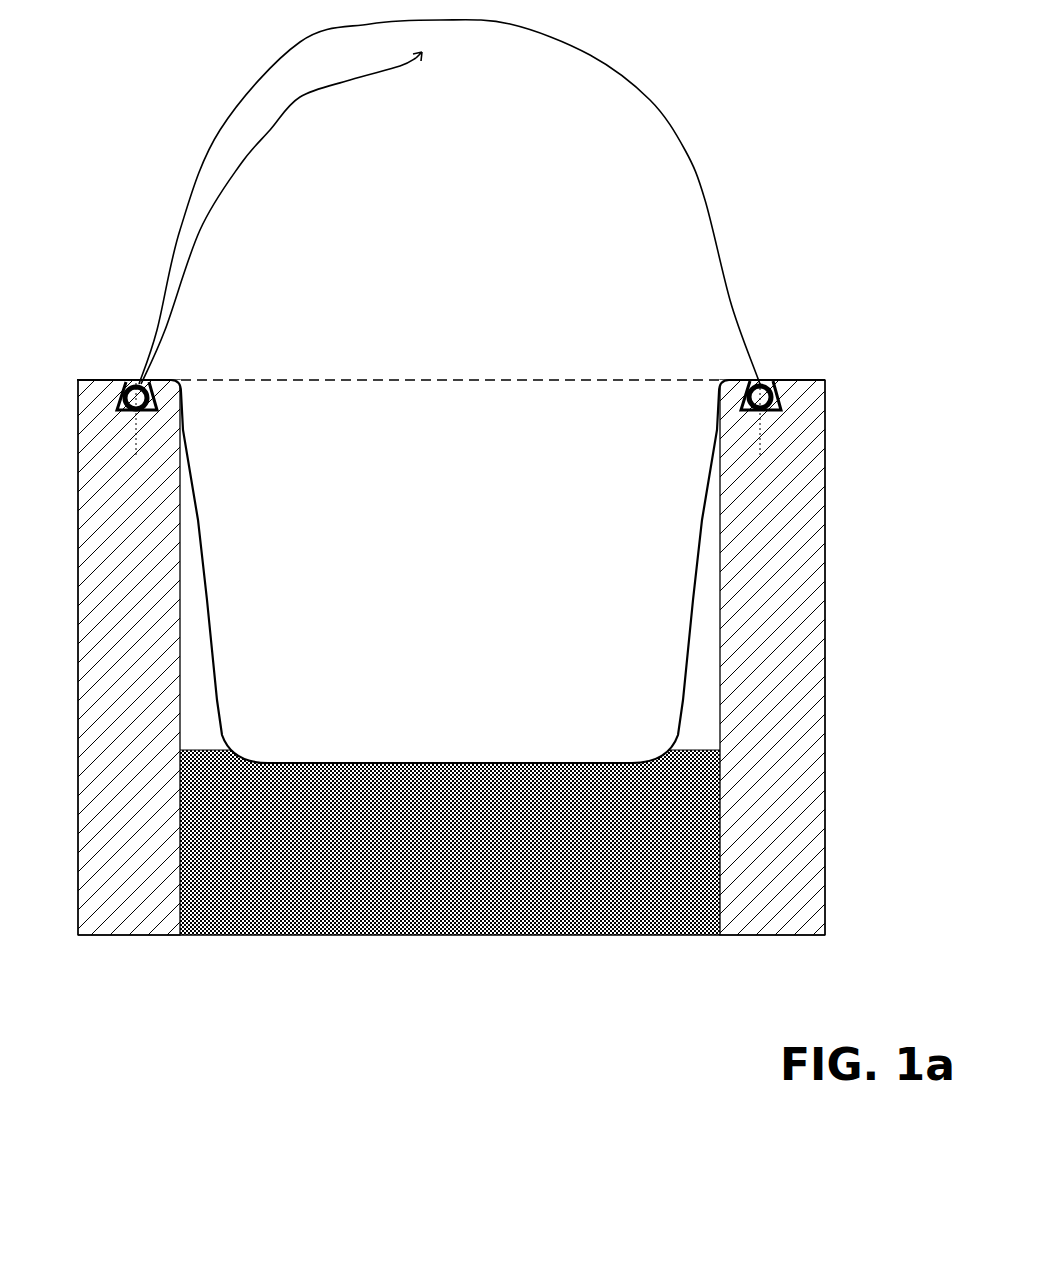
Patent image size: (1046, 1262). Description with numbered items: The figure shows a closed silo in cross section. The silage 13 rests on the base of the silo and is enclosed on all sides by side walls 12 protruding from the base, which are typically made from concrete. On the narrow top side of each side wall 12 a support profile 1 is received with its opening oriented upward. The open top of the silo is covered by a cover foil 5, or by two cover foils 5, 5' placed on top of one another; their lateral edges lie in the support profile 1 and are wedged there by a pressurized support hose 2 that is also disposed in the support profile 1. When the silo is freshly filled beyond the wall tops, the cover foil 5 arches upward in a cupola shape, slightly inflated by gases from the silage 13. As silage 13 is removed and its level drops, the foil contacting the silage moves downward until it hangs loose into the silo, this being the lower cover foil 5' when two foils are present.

The support profile 1 is at (121, 402).
The support hose 2 is at (160, 407).
The cover foil 5 is at (451, 477).
The cover foil 5' is at (281, 218).
The side walls 12 is at (451, 657).
The silage 13 is at (400, 890).